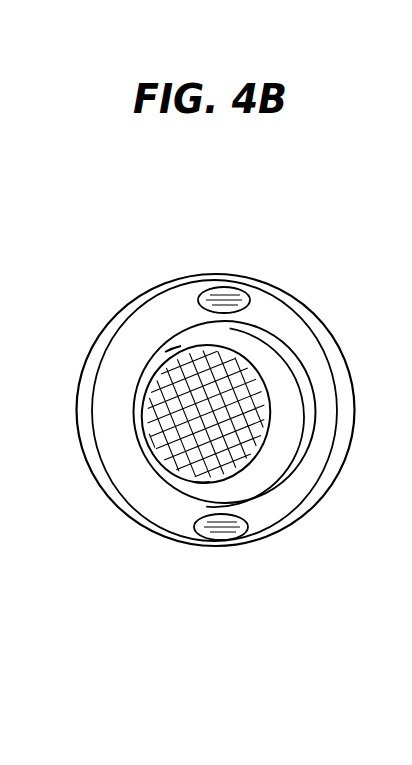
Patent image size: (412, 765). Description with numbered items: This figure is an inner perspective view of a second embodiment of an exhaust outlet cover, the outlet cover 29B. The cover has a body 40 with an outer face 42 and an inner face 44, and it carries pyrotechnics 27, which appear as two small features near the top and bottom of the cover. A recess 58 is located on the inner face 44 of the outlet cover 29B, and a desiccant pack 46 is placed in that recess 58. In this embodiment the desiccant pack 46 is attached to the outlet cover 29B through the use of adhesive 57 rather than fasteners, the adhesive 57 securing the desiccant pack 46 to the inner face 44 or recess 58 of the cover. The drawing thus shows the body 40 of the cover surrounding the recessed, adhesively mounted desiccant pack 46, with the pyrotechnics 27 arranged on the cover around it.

The outlet cover 29B is at (274, 232).
The body 40 is at (112, 332).
The outer face 42 is at (102, 490).
The inner face 44 is at (317, 332).
The desiccant pack 46 is at (257, 442).
The adhesive 57 is at (177, 349).
The recess 58 is at (200, 493).
The pyrotechnics 27 is at (226, 288).